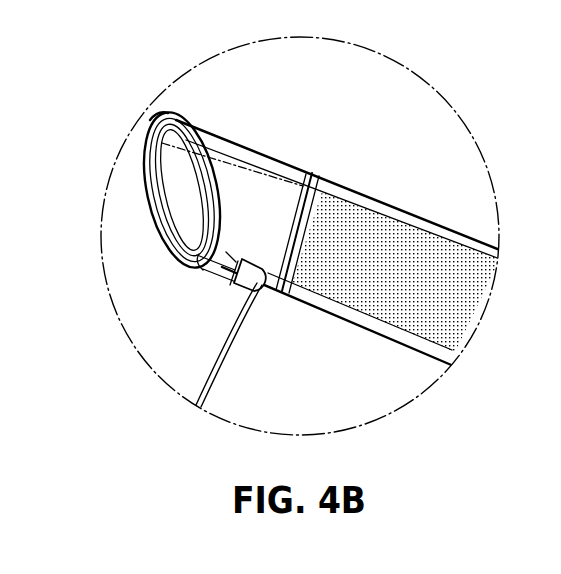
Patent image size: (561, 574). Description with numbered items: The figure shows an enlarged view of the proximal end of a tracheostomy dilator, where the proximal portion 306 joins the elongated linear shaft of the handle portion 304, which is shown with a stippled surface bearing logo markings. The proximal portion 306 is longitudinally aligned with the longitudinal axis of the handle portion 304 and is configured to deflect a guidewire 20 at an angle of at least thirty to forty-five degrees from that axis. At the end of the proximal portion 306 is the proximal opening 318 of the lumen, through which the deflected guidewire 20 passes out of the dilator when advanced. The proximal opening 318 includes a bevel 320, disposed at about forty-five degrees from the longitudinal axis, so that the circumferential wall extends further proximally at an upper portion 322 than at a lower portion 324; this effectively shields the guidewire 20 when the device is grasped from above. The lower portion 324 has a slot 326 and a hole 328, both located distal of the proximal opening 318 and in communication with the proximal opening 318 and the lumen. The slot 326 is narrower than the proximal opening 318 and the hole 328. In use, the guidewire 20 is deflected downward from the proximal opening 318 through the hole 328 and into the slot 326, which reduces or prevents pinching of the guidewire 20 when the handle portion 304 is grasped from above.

The guidewire 20 is at (230, 348).
The handle portion 304 is at (364, 200).
The proximal portion 306 is at (266, 155).
The proximal opening 318 is at (160, 140).
The bevel 320 is at (138, 178).
The upper portion 322 is at (150, 116).
The lower portion 324 is at (204, 272).
The slot 326 is at (226, 252).
The hole 328 is at (246, 277).